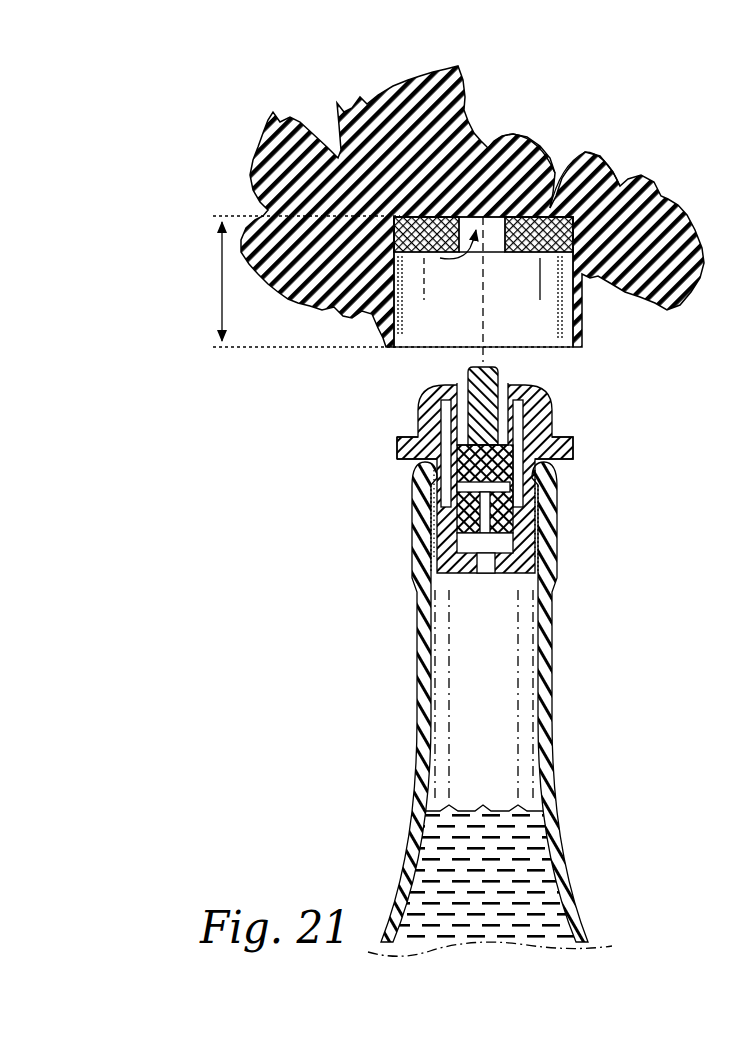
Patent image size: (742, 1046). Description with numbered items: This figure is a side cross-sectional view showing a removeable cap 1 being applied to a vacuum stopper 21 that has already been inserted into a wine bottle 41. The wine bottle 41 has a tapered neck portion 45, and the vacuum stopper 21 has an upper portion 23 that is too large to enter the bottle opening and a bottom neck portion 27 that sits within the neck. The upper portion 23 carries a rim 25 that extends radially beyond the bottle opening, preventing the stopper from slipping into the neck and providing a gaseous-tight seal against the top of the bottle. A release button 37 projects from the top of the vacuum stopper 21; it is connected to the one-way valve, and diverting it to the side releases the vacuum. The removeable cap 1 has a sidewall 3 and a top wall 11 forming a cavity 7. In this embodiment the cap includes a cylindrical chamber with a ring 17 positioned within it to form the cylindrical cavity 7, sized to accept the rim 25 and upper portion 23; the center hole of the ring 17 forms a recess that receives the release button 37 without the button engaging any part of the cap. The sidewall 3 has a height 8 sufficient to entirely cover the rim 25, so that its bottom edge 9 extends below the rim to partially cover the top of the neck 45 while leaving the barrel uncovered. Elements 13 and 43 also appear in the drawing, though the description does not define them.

The removeable cap 1 is at (641, 102).
The sidewall 3 is at (582, 316).
The cavity 7 is at (432, 320).
The height 8 is at (220, 292).
The bottom edge 9 is at (573, 348).
The top wall 11 is at (411, 217).
The receptacle lobe 13 is at (508, 142).
The ring 17 is at (550, 217).
The vacuum stopper 21 is at (493, 470).
The upper portion 23 is at (419, 430).
The rim 25 is at (397, 446).
The bottom neck portion 27 is at (547, 503).
The release button 37 is at (498, 374).
The wine bottle 41 is at (568, 853).
The container interior 43 is at (500, 742).
The tapered neck portion 45 is at (549, 682).